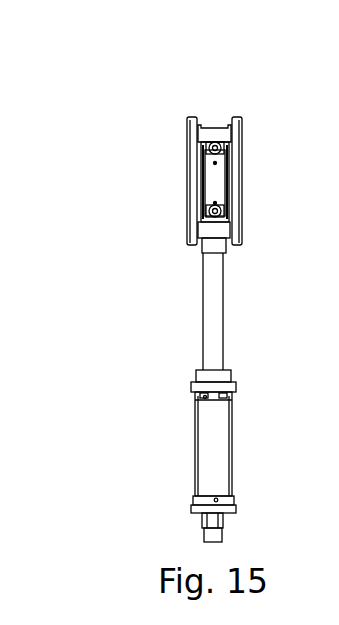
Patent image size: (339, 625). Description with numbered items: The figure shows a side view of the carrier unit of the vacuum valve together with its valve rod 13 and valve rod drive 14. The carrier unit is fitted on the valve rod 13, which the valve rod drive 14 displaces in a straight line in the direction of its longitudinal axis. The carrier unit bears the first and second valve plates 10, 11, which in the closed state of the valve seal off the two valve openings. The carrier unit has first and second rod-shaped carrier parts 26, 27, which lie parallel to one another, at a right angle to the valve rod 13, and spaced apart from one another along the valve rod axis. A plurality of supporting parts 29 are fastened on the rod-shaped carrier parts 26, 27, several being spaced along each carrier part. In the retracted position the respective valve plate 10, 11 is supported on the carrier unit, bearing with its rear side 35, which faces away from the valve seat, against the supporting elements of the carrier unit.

The first valve plate 10 is at (188, 214).
The second valve plate 11 is at (239, 215).
The valve rod 13 is at (211, 319).
The valve rod drive 14 is at (189, 453).
The first rod-shaped carrier part 26 is at (222, 145).
The second rod-shaped carrier part 27 is at (223, 213).
The supporting parts 29 is at (208, 129).
The rear side 35 is at (203, 157).